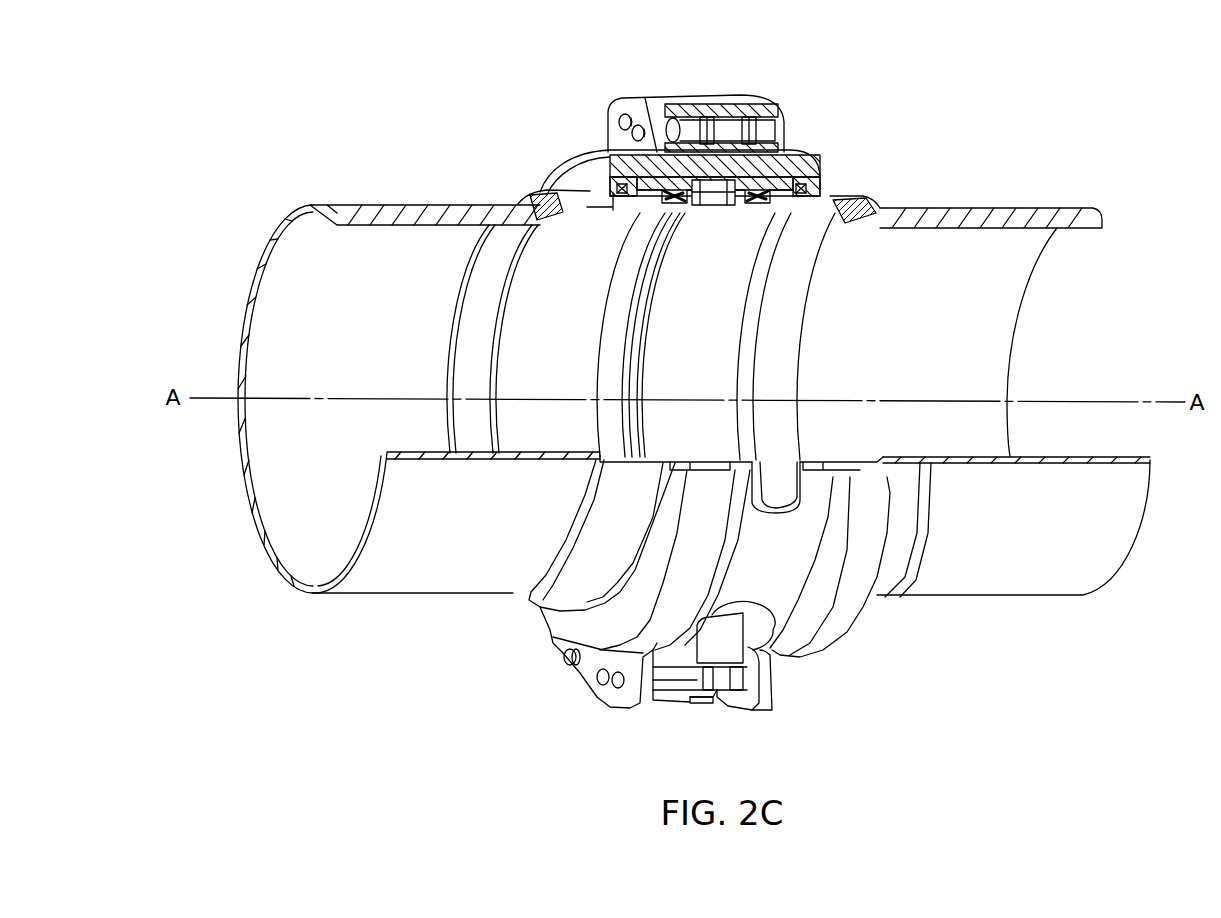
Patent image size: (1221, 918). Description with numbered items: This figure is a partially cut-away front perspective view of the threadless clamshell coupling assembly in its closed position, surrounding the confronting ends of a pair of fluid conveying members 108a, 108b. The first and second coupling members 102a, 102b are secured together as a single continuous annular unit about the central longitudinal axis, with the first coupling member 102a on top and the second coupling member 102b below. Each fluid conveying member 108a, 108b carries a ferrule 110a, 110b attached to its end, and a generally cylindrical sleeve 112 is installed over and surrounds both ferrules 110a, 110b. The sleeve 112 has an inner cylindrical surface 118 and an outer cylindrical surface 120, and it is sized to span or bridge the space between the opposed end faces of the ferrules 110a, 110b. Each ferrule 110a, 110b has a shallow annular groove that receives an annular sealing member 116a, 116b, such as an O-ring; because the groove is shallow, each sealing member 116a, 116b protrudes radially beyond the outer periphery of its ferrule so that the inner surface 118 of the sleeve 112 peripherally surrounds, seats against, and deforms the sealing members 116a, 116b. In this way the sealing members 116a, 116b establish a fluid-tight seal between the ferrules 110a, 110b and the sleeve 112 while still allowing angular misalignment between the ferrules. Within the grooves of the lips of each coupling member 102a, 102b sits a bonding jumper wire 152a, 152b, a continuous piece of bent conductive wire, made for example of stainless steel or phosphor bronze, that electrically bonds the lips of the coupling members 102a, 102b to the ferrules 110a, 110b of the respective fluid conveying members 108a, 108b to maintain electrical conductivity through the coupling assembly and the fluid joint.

The first coupling member 102a is at (689, 175).
The second coupling member 102b is at (824, 662).
The fluid conveying member 108a is at (372, 199).
The fluid conveying member 108b is at (994, 201).
The ferrule 110a is at (522, 186).
The ferrule 110b is at (846, 183).
The sleeve 112 is at (759, 100).
The annular sealing member 116a is at (608, 158).
The annular sealing member 116b is at (793, 156).
The inner cylindrical surface 118 is at (700, 207).
The outer cylindrical surface 120 is at (656, 97).
The bonding jumper wire 152a is at (640, 200).
The bonding jumper wire 152b is at (803, 195).